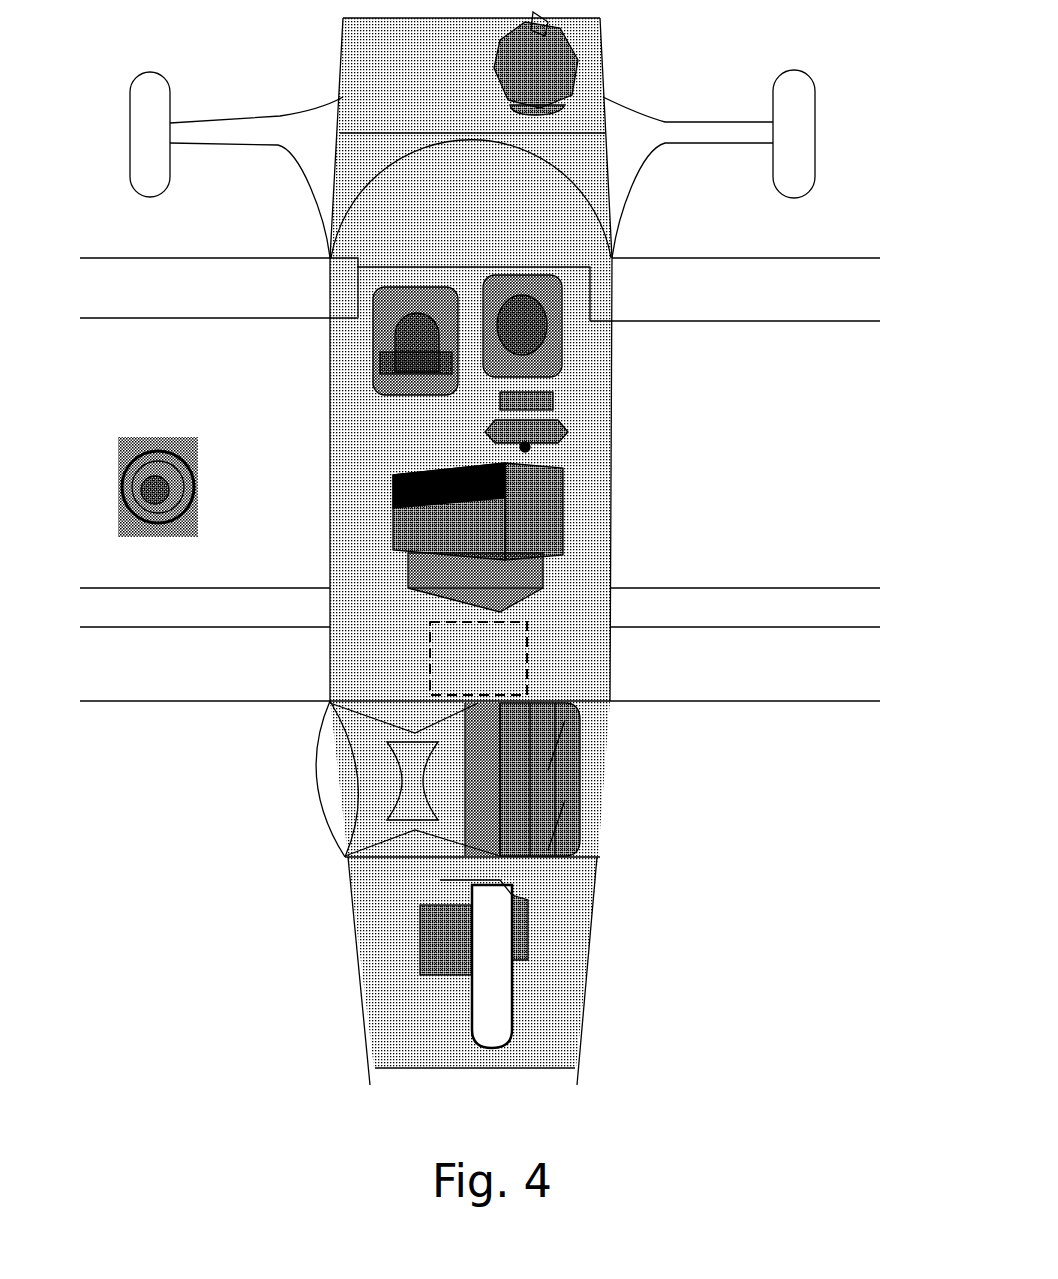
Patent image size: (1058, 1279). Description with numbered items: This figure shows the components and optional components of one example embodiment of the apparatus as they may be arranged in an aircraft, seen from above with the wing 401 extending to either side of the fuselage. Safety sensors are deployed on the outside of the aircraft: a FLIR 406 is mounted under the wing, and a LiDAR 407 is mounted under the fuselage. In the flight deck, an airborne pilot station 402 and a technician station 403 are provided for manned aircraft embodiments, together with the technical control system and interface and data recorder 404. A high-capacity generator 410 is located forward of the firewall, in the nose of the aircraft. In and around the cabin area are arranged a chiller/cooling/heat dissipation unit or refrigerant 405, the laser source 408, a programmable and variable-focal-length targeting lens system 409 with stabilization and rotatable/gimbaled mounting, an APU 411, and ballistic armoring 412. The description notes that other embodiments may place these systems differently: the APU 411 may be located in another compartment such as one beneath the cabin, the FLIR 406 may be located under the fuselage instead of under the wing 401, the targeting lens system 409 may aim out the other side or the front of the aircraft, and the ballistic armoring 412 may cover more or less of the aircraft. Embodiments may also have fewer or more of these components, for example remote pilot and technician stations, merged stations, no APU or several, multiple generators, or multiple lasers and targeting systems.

The wing 401 is at (814, 258).
The airborne pilot station 402 is at (373, 340).
The technician station 403 is at (560, 342).
The data recorder 404 is at (565, 428).
The chiller/cooling/heat dissipation unit or refrigerant 405 is at (395, 476).
The FLIR 406 is at (118, 462).
The LiDAR 407 is at (527, 655).
The laser source 408 is at (588, 782).
The targeting lens system 409 is at (312, 783).
The high-capacity generator 410 is at (575, 67).
The APU 411 is at (527, 945).
The ballistic armoring 412 is at (393, 1000).